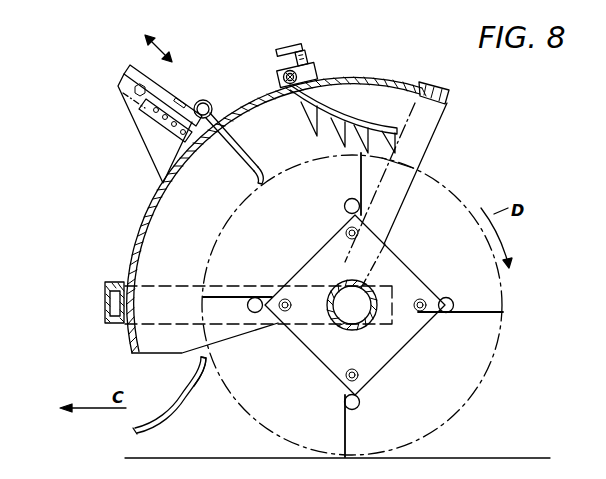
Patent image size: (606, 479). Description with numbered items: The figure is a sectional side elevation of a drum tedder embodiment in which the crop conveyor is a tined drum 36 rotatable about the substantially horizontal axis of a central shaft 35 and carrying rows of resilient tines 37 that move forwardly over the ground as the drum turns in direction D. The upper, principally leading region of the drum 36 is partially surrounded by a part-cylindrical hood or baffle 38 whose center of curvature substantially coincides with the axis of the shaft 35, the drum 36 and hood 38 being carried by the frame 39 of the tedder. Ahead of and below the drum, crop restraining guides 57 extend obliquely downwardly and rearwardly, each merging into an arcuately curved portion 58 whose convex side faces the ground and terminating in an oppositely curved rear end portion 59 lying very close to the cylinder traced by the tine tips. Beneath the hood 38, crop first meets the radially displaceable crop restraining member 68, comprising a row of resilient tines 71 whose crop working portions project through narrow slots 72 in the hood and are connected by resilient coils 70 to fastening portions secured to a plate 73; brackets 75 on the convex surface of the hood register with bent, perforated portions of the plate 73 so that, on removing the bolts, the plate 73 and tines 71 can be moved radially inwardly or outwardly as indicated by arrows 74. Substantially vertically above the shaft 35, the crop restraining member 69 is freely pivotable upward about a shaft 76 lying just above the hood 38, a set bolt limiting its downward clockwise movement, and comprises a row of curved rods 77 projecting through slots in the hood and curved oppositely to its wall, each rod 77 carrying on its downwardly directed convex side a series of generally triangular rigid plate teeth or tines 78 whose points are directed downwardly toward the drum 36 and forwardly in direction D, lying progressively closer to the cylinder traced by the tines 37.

The central shaft 35 is at (350, 312).
The tined drum 36 is at (401, 363).
The resilient tines 37 is at (360, 189).
The hood or baffle 38 is at (146, 218).
The frame 39 is at (104, 301).
The crop restraining guide 57 is at (132, 436).
The arcuately curved portion 58 is at (160, 427).
The rear end portion 59 is at (202, 373).
The crop restraining member 68 is at (100, 141).
The crop restraining member 69 is at (366, 111).
The resilient coil 70 is at (208, 101).
The tines 71 is at (250, 178).
The narrow slot 72 is at (221, 130).
The plate 73 is at (133, 64).
The arrows 74 is at (170, 46).
The brackets 75 is at (148, 152).
The shaft 76 is at (284, 70).
The curved rods 77 is at (371, 129).
The teeth or tines 78 is at (328, 160).